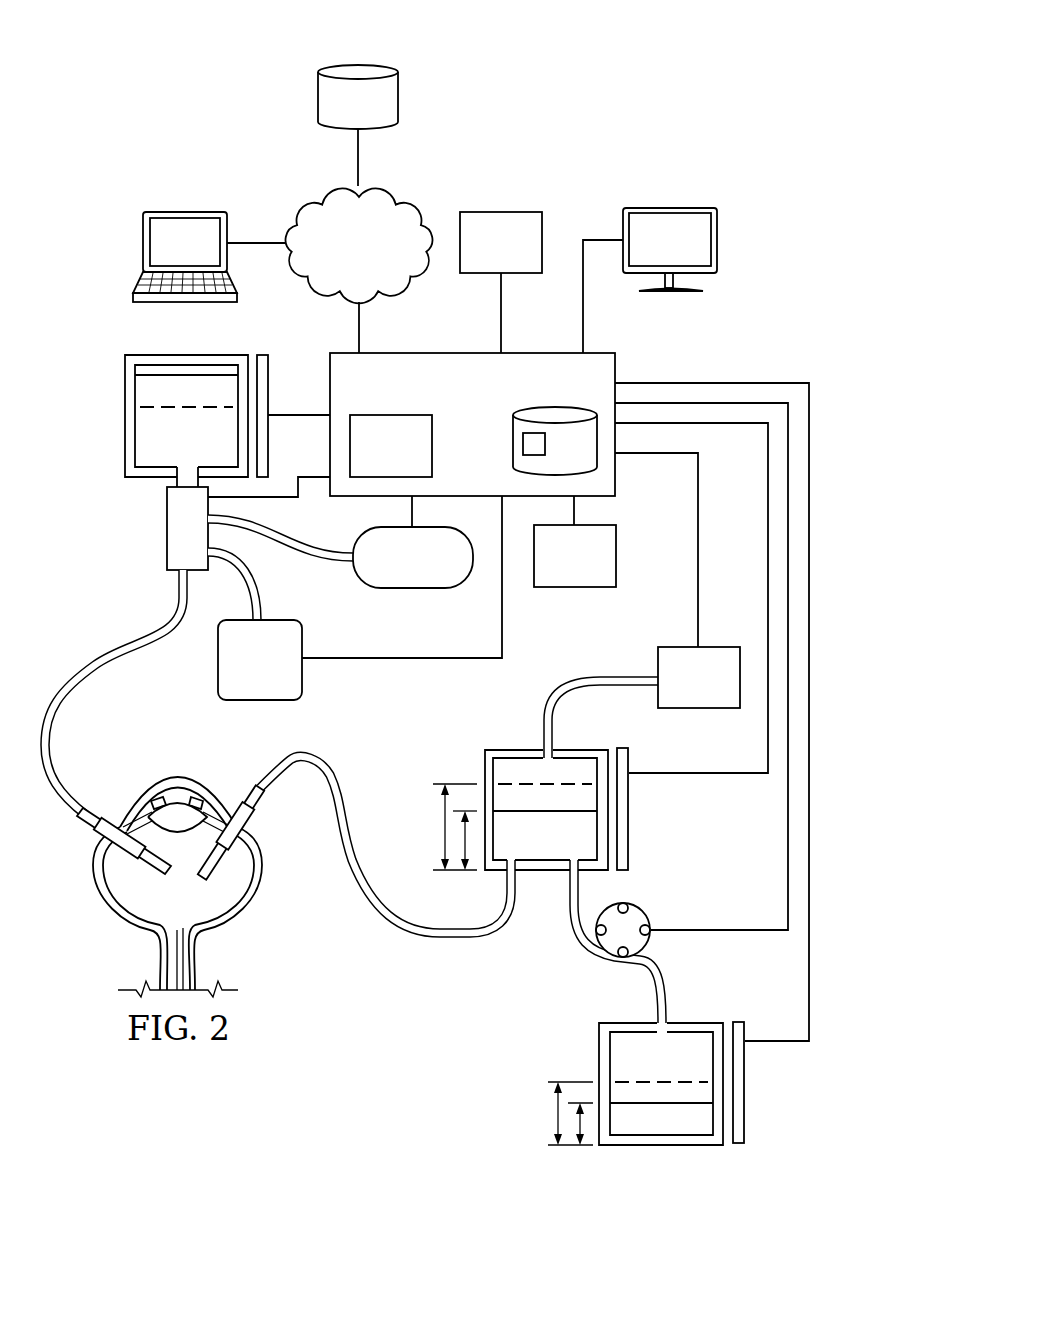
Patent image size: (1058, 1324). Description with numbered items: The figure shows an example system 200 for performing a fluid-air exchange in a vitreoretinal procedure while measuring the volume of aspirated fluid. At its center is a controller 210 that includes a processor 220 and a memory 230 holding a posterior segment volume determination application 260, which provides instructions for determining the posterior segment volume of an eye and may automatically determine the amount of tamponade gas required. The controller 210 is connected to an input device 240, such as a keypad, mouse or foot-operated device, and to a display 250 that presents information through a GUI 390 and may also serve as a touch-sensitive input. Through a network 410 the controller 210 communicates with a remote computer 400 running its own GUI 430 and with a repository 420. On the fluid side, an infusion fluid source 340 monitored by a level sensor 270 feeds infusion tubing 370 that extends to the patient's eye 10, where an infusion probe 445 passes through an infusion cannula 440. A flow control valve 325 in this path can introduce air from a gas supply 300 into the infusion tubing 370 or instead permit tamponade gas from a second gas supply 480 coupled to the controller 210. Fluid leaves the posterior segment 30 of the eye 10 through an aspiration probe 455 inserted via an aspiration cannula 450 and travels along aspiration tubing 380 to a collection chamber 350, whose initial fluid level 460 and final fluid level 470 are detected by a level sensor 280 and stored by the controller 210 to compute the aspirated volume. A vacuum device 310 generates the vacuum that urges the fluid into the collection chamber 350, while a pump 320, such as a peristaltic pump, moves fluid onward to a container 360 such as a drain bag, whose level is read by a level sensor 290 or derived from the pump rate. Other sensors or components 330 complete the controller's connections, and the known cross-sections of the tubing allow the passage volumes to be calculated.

The system 200 is at (633, 108).
The repository 420 is at (371, 62).
The network 410 is at (340, 257).
The computer 400 is at (182, 231).
The GUI 430 is at (150, 243).
The input device 240 is at (511, 211).
The display 250 is at (683, 257).
The GUI 390 is at (708, 241).
The controller 210 is at (459, 346).
The processor 220 is at (390, 413).
The memory 230 is at (561, 406).
The posterior segment volume determination application 260 is at (522, 443).
The infusion fluid source 340 is at (124, 413).
The level sensor 270 is at (264, 353).
The flow control valve 325 is at (165, 525).
The infusion tubing 370 is at (110, 649).
The gas supply 300 is at (401, 590).
The gas supply 480 is at (216, 680).
The other sensors or components 330 is at (585, 588).
The vacuum device 310 is at (710, 709).
The collection chamber 350 is at (505, 748).
The final fluid level 470 is at (443, 820).
The initial fluid level 460 is at (463, 840).
The level sensor 280 is at (630, 820).
The pump 320 is at (642, 907).
The aspiration tubing 380 is at (443, 937).
The container 360 is at (702, 1021).
The level sensor 290 is at (746, 1090).
The eye 10 is at (172, 887).
The posterior segment 30 is at (229, 891).
The infusion probe 445 is at (106, 819).
The infusion cannula 440 is at (114, 816).
The aspiration cannula 450 is at (258, 817).
The aspiration probe 455 is at (246, 803).